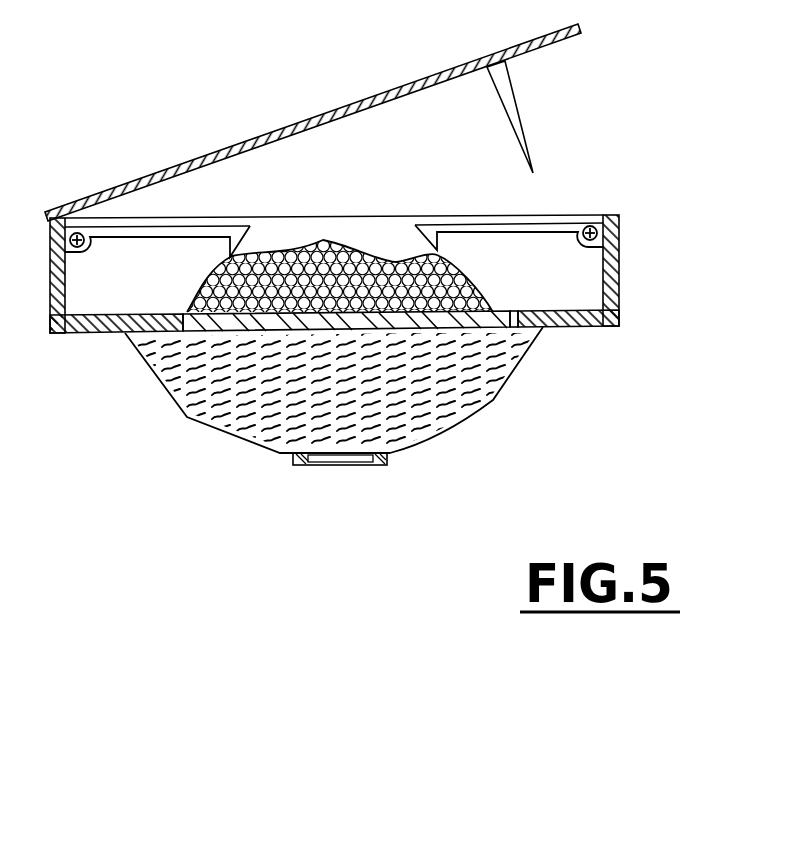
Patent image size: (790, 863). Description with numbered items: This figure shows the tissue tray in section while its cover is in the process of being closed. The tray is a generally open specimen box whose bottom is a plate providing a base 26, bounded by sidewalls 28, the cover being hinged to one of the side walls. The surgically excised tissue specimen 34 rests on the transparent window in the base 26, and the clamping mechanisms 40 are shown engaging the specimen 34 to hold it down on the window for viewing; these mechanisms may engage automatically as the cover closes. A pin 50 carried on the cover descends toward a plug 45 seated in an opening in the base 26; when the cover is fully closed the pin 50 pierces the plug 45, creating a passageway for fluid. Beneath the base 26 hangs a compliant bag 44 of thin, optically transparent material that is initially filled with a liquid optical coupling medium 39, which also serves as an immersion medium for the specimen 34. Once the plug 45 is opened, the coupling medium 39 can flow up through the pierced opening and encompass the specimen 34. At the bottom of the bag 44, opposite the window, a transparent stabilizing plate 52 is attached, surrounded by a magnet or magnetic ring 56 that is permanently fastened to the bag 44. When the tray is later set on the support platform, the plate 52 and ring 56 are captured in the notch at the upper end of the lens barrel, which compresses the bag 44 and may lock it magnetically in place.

The base 26 is at (568, 328).
The sidewalls 28 is at (620, 272).
The tissue specimen 34 is at (333, 240).
The optical coupling medium 39 is at (198, 408).
The clamping mechanisms 40 is at (206, 229).
The compliant bag 44 is at (460, 425).
The plug 45 is at (512, 310).
The pin 50 is at (506, 84).
The stabilizing plate 52 is at (357, 466).
The magnetic ring 56 is at (300, 466).